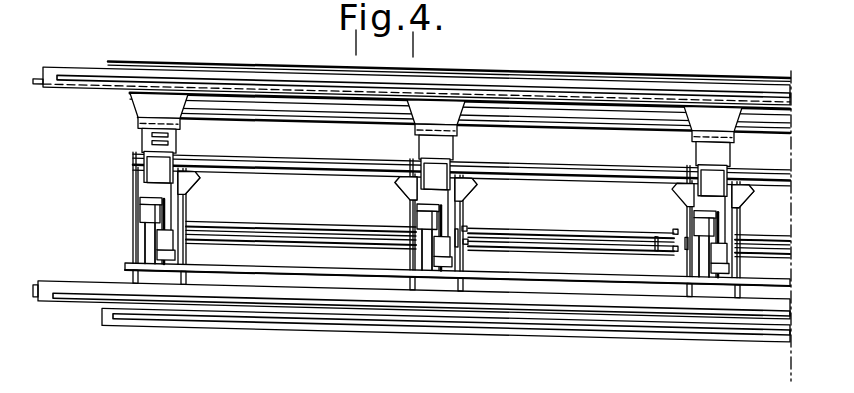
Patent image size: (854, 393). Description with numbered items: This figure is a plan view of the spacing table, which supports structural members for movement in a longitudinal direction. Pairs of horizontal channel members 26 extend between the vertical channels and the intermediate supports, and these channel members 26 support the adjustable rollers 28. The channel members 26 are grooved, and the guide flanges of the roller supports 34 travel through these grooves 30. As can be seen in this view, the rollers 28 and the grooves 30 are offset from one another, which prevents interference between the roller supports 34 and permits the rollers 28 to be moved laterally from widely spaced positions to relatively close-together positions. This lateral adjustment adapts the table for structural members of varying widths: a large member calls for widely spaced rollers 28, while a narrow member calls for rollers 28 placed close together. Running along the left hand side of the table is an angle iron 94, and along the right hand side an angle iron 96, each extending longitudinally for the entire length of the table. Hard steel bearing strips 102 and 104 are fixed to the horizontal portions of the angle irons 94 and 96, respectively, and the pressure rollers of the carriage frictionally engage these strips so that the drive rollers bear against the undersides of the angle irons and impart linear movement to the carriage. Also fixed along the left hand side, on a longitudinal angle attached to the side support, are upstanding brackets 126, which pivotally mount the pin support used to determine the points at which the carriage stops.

The horizontal channel members 26 is at (410, 199).
The adjustable rollers 28 is at (140, 199).
The grooves 30 is at (187, 199).
The roller supports 34 is at (143, 217).
The angle iron 94 is at (45, 306).
The angle iron 96 is at (48, 67).
The bearing strip 102 is at (70, 302).
The bearing strip 104 is at (92, 76).
The upstanding brackets 126 is at (233, 326).